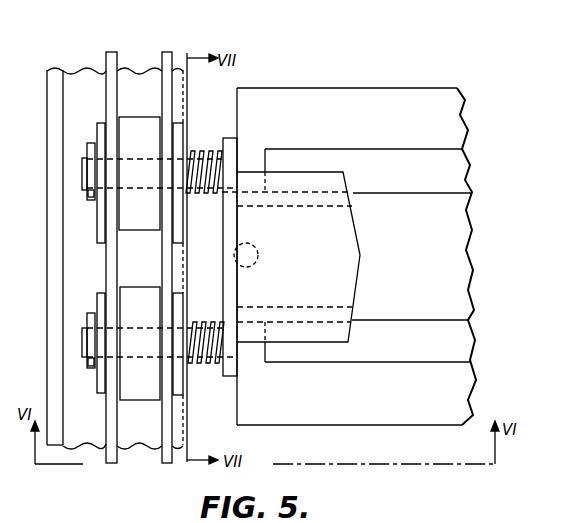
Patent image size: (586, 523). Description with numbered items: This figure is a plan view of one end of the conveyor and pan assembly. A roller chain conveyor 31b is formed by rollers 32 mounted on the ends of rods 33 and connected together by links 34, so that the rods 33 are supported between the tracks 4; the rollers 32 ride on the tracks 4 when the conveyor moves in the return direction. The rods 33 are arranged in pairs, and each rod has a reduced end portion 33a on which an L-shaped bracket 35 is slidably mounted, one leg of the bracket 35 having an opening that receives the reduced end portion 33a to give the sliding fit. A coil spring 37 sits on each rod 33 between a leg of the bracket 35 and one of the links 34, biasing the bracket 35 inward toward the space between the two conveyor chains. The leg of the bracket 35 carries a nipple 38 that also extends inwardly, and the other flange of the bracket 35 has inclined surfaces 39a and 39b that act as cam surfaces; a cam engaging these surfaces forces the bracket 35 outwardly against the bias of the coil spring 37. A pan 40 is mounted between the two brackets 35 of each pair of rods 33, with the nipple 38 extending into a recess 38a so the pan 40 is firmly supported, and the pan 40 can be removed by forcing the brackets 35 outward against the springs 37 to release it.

The track 4 is at (50, 307).
The roller chain conveyor 31b is at (188, 46).
The roller 32 is at (136, 117).
The rod 33 is at (383, 135).
The reduced end portion 33a is at (266, 122).
The link 34 is at (167, 62).
The bracket 35 is at (236, 290).
The coil spring 37 is at (202, 197).
The nipple 38 is at (250, 246).
The recess 38a is at (262, 257).
The inclined surface 39a is at (355, 297).
The inclined surface 39b is at (352, 245).
The pan 40 is at (372, 420).